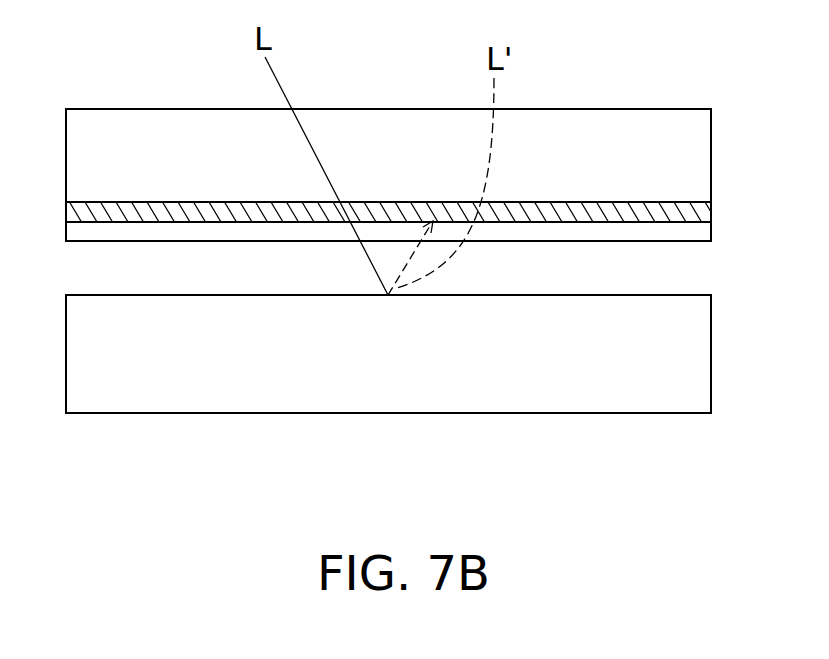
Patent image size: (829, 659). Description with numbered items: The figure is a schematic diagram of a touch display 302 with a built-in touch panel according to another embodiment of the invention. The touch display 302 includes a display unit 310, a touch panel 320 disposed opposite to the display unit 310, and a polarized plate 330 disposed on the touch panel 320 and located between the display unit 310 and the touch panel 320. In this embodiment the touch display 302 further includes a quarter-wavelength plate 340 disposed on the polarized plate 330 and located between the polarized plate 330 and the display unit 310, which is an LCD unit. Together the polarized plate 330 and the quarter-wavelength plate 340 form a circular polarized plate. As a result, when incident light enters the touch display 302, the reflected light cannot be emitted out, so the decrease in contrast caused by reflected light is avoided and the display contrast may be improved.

The touch display with built-in touch panel 302 is at (447, 293).
The display unit 310 is at (695, 333).
The touch panel 320 is at (697, 153).
The polarized plate 330 is at (697, 212).
The quarter-wavelength plate 340 is at (708, 233).